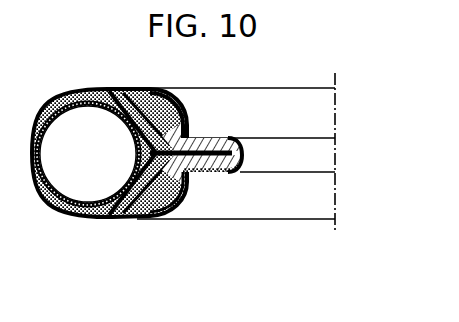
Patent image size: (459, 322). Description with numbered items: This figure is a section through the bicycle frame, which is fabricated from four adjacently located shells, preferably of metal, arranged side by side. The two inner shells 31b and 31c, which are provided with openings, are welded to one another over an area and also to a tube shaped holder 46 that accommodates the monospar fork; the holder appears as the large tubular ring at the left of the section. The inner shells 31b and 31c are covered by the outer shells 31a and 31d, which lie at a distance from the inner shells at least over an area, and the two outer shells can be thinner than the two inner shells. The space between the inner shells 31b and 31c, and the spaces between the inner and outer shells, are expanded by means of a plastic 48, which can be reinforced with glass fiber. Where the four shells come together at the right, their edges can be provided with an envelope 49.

The outer shell 31a is at (147, 220).
The inner shell 31b is at (173, 190).
The inner shell 31c is at (173, 122).
The outer shell 31d is at (155, 97).
The tube shaped holder 46 is at (78, 219).
The plastic 48 is at (108, 87).
The envelope 49 is at (237, 171).